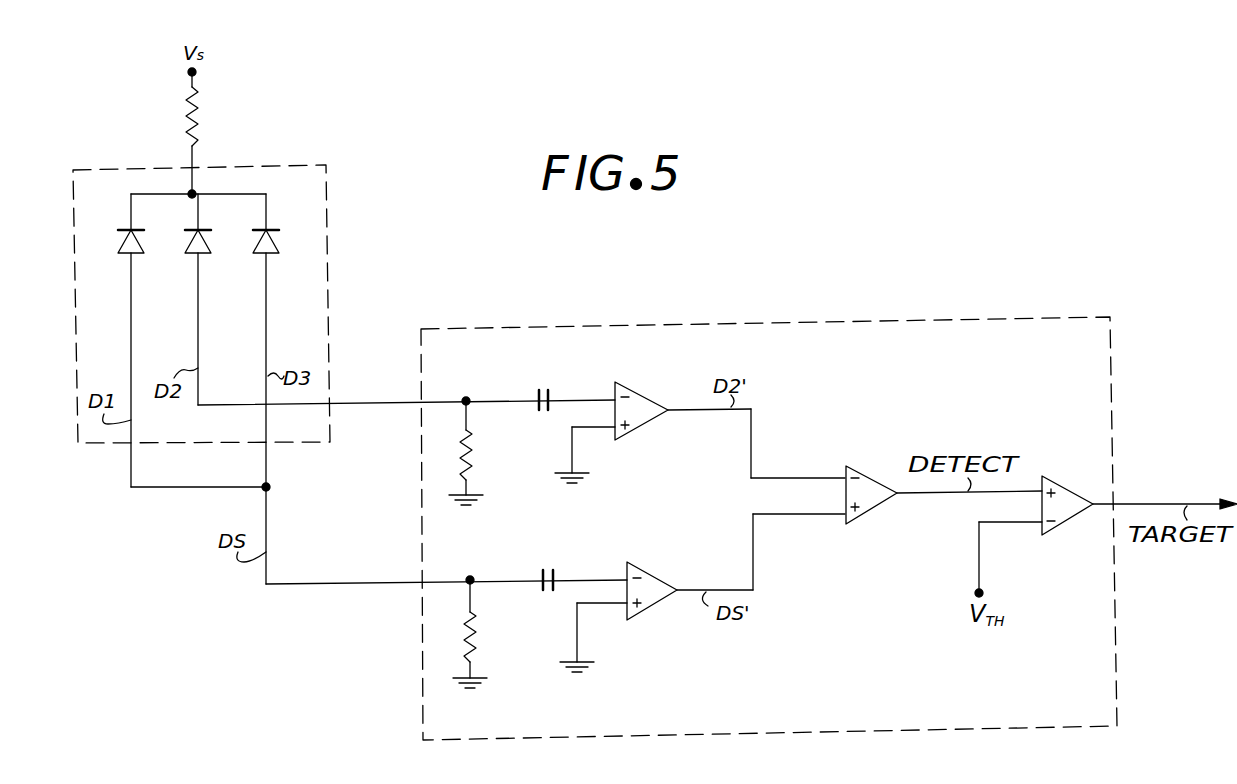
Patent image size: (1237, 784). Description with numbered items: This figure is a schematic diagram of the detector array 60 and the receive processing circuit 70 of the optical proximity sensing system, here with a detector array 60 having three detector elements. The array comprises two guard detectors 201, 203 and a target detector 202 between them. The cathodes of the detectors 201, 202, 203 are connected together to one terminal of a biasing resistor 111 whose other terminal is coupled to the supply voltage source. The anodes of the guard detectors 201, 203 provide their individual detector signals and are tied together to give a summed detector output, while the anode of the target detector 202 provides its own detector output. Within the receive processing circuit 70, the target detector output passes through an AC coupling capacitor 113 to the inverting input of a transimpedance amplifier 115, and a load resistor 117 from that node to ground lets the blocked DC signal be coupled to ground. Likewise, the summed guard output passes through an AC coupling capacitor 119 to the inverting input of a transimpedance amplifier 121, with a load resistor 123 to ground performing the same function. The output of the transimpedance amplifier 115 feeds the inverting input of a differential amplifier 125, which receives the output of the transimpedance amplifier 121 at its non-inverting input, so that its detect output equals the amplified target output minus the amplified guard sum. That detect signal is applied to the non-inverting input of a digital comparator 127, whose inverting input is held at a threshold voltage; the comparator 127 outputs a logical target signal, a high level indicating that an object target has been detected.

The biasing resistor 111 is at (200, 100).
The detector array 60 is at (310, 166).
The guard detector 201 is at (122, 256).
The target detector 202 is at (189, 256).
The guard detector 203 is at (257, 256).
The receive processing circuit 70 is at (805, 322).
The AC coupling capacitor 113 is at (568, 372).
The transimpedance amplifier 115 is at (645, 398).
The load resistor 117 is at (470, 442).
The AC coupling capacitor 119 is at (573, 552).
The transimpedance amplifier 121 is at (653, 577).
The load resistor 123 is at (474, 630).
The differential amplifier 125 is at (862, 516).
The digital comparator 127 is at (1053, 536).